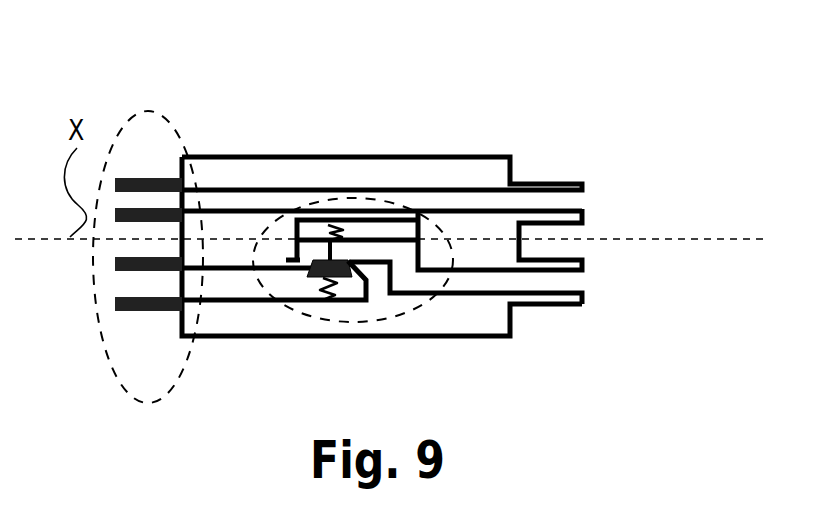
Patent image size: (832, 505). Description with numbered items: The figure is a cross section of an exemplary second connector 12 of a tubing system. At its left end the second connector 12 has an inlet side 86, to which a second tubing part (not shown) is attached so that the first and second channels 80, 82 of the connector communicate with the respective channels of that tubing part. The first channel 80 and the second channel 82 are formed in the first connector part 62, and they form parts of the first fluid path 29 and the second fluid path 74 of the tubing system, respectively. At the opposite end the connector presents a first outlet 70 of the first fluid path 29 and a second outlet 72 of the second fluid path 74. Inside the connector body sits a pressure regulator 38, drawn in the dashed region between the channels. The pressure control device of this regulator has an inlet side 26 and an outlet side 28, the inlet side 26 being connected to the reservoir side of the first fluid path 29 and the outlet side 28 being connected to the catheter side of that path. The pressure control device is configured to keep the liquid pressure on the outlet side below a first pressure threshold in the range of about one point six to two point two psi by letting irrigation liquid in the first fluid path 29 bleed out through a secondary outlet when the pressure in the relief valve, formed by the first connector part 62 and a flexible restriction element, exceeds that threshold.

The second connector 12 is at (137, 97).
The inlet side 26 is at (120, 283).
The inlet side 86 is at (170, 392).
The second channel 82 is at (382, 142).
The second fluid path 74 is at (269, 200).
The first connector part 62 is at (463, 155).
The second outlet 72 is at (577, 202).
The outlet side 28 is at (548, 271).
The first outlet 70 is at (578, 278).
The first channel 80 is at (387, 311).
The first fluid path 29 is at (488, 282).
The pressure regulator 38 is at (435, 300).